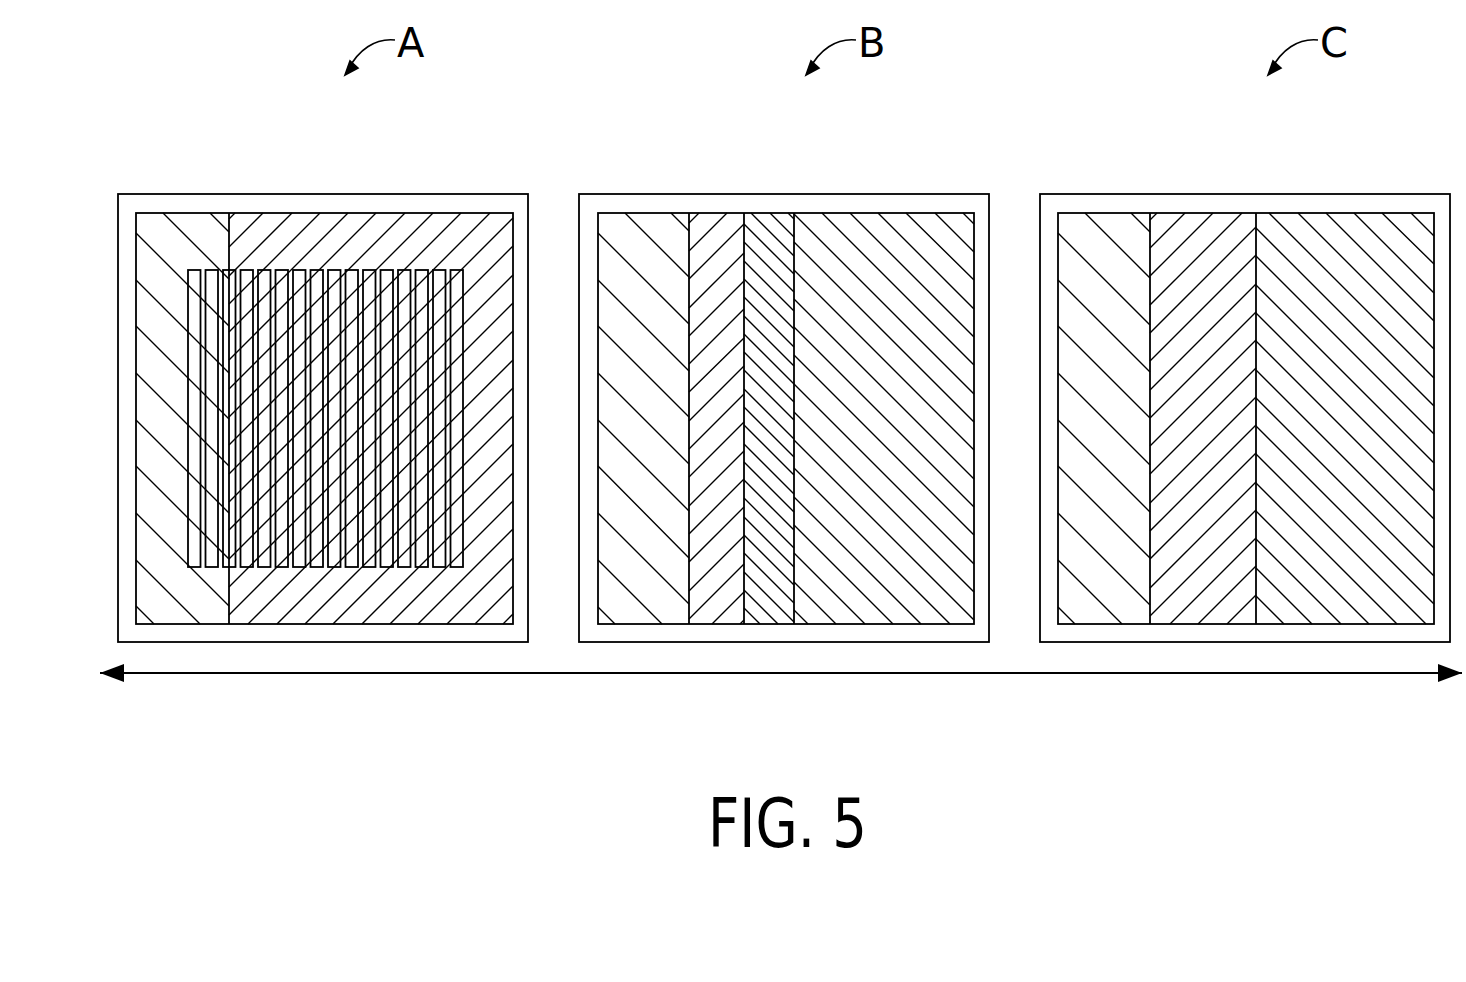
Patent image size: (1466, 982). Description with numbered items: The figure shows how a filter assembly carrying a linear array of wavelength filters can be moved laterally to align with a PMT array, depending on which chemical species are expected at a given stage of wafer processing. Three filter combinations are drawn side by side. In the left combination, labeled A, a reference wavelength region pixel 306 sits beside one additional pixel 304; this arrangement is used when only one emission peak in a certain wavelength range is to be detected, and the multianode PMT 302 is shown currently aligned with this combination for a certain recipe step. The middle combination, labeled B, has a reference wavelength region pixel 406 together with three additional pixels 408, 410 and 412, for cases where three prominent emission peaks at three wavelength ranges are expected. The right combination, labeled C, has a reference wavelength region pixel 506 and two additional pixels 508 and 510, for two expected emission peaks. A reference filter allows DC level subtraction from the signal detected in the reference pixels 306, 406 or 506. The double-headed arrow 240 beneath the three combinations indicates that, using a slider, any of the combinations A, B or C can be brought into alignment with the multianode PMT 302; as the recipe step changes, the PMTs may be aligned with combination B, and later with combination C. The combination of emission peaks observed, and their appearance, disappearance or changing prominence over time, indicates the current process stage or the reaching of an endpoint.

The multianode PMT 302 is at (463, 250).
The additional pixel 304 is at (318, 233).
The reference wavelength region pixel 306 is at (180, 233).
The reference wavelength region pixel 406 is at (643, 235).
The additional pixel 408 is at (713, 233).
The additional pixel 410 is at (775, 233).
The additional pixel 412 is at (884, 233).
The reference wavelength region pixel 506 is at (1102, 233).
The additional pixel 508 is at (1202, 233).
The additional pixel 510 is at (1345, 233).
The double-headed arrow 240 is at (1212, 675).